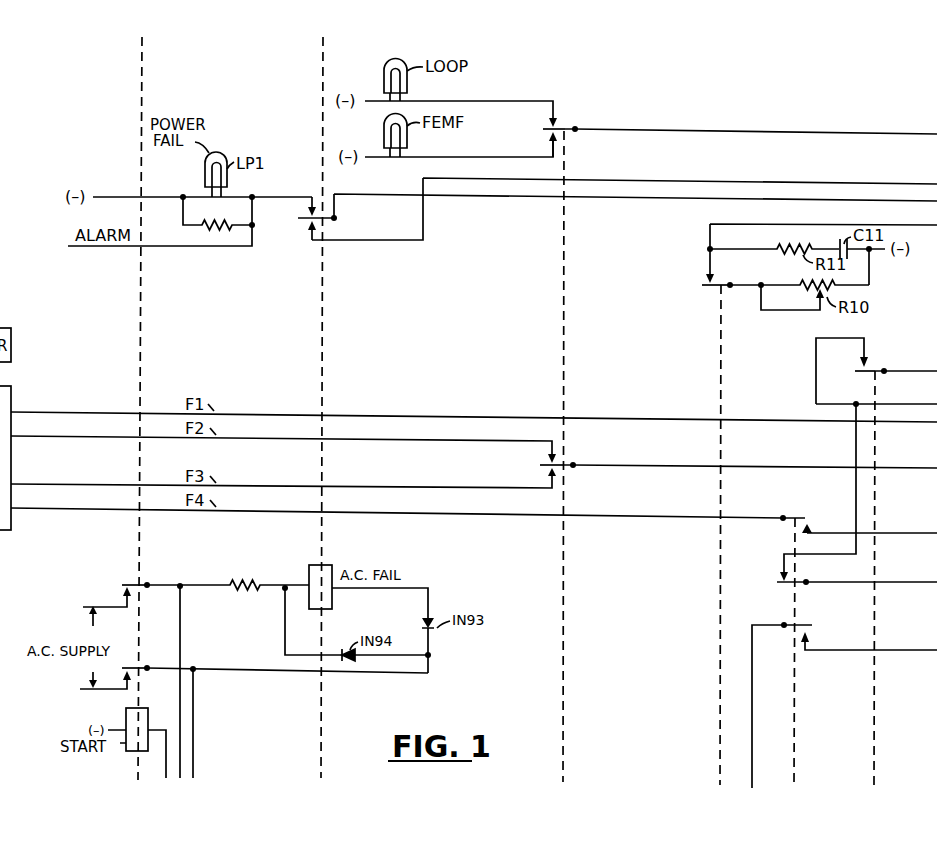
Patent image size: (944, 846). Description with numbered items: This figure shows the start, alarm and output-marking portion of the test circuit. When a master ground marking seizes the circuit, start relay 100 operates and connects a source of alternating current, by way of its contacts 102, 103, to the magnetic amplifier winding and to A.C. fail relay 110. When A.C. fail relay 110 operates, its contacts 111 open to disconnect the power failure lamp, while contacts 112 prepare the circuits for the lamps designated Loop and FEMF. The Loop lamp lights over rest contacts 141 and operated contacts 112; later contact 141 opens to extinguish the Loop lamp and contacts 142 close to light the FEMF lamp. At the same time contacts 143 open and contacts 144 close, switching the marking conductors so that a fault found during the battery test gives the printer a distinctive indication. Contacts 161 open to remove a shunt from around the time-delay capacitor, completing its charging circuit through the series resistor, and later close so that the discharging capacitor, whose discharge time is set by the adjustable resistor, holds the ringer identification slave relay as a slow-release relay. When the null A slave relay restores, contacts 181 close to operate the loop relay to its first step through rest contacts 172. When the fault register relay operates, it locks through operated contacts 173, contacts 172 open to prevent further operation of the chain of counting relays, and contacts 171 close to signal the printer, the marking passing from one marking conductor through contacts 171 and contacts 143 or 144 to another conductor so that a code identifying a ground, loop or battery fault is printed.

The start relay 100 is at (145, 397).
The A.C. fail relay 110 is at (331, 396).
The contacts of A.C. fail relay 111 is at (310, 216).
The contacts of A.C. fail relay 112 is at (310, 222).
The rest contacts of relay 340 141 is at (559, 131).
The contacts of relay 340 142 is at (559, 138).
The contacts of relay 340 143 is at (560, 466).
The contacts of relay 340 144 is at (560, 474).
The contacts of ringer identification relay 360 161 is at (712, 285).
The contacts of fault register relay 370 171 is at (806, 525).
The contacts of fault register relay 370 172 is at (781, 576).
The contacts of fault register relay 370 173 is at (810, 636).
The contacts of null A slave relay 580 181 is at (866, 368).
The A.C. supply contact 102 is at (134, 672).
The A.C. supply contact 103 is at (124, 594).